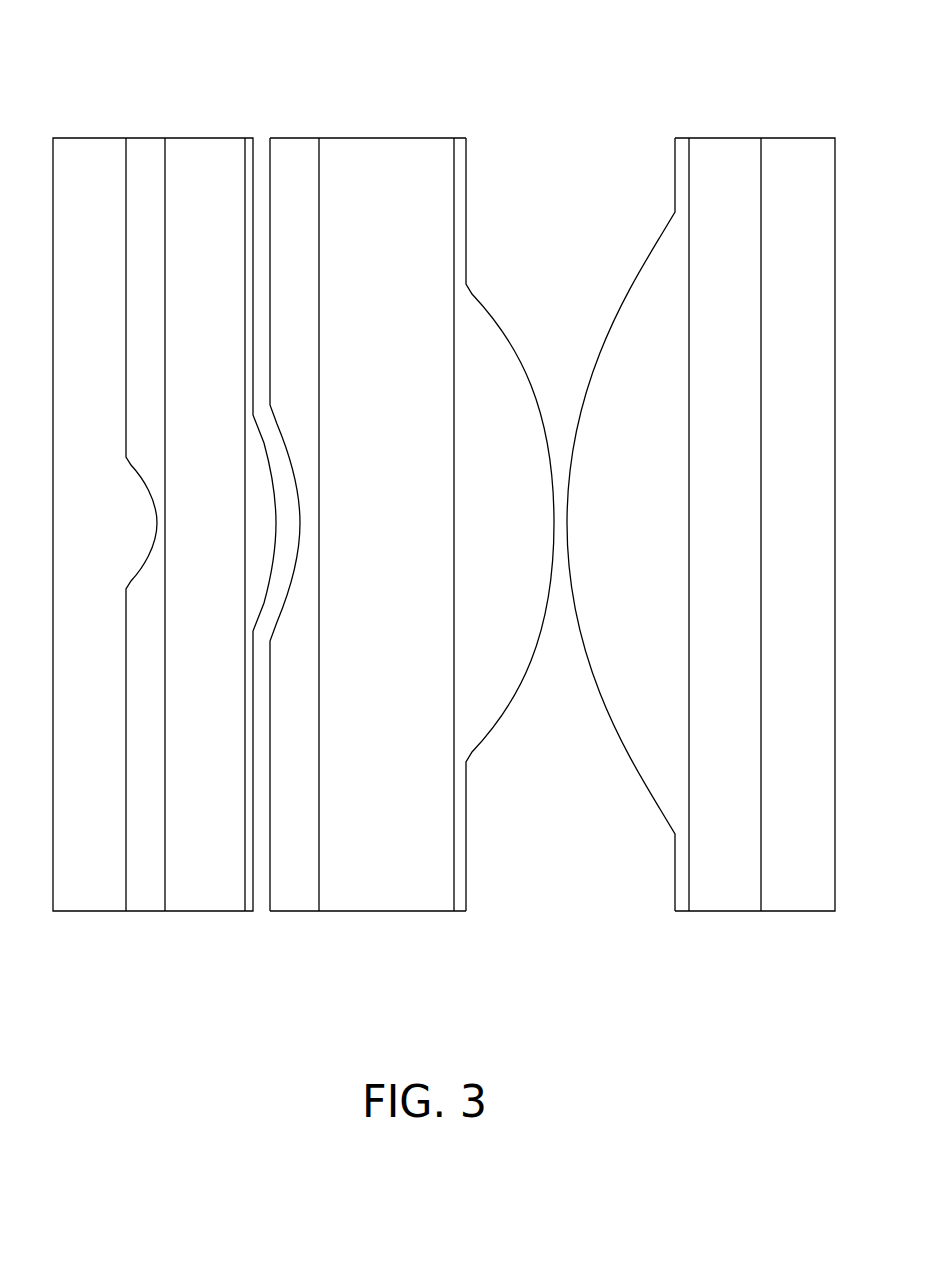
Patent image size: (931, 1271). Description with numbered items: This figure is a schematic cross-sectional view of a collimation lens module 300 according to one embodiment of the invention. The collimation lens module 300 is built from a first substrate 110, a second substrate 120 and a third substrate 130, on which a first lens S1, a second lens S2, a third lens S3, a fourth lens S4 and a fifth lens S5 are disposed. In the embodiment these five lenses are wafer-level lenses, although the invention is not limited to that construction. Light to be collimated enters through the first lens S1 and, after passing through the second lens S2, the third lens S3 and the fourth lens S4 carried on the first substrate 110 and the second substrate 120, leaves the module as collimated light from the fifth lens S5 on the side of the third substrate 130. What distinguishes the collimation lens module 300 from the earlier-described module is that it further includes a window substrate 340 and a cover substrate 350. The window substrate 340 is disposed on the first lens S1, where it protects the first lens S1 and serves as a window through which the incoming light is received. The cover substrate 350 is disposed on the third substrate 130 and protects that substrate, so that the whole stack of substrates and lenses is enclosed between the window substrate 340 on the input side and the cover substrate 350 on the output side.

The collimation lens module 300 is at (87, 52).
The window substrate 340 is at (84, 890).
The first lens S1 is at (148, 893).
The first substrate 110 is at (199, 890).
The second lens S2 is at (251, 898).
The third lens S3 is at (290, 890).
The second substrate 120 is at (383, 890).
The fourth lens S4 is at (460, 898).
The fifth lens S5 is at (638, 747).
The third substrate 130 is at (727, 890).
The cover substrate 350 is at (798, 890).